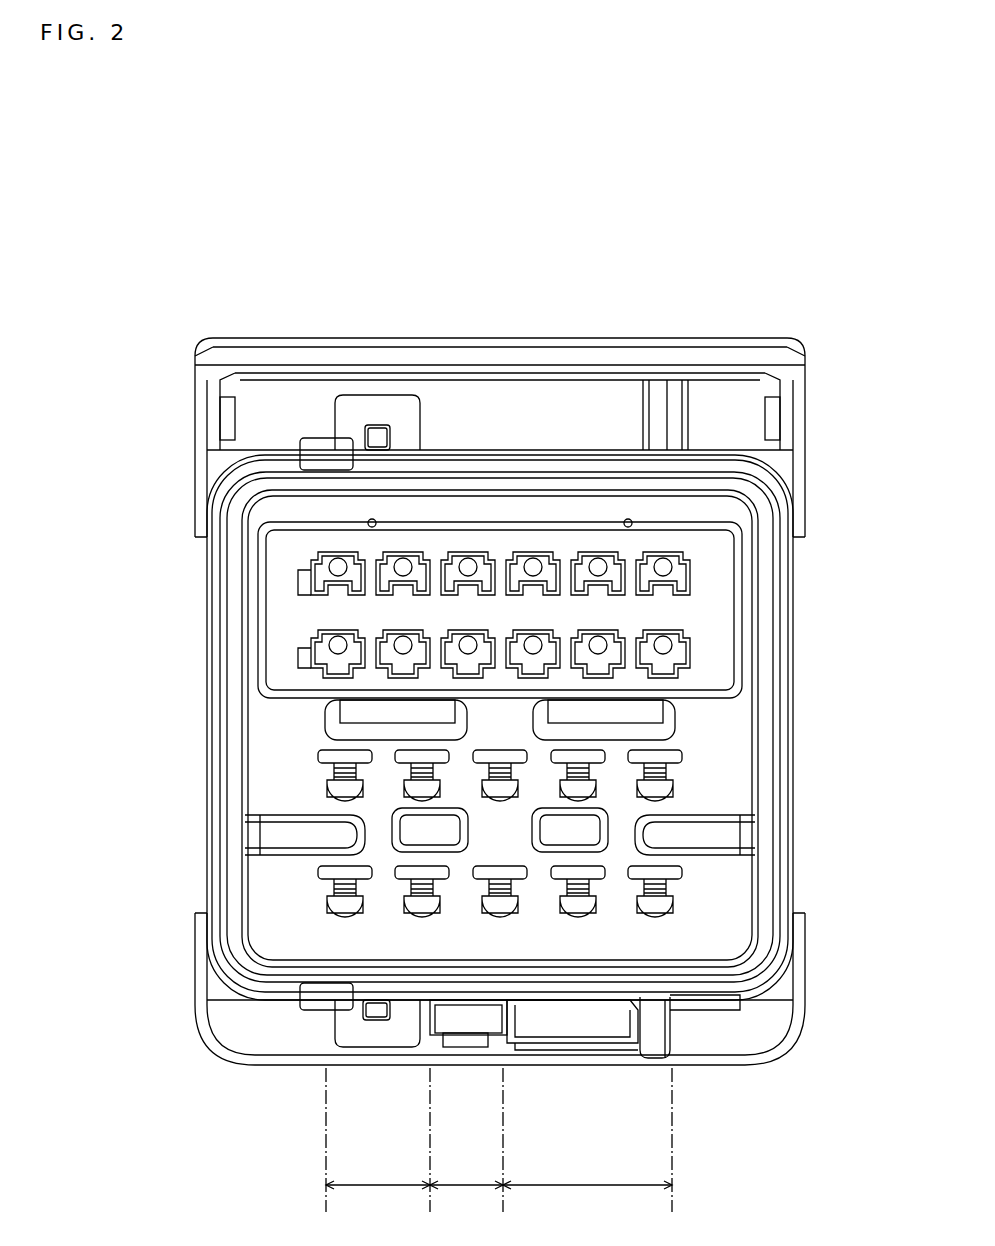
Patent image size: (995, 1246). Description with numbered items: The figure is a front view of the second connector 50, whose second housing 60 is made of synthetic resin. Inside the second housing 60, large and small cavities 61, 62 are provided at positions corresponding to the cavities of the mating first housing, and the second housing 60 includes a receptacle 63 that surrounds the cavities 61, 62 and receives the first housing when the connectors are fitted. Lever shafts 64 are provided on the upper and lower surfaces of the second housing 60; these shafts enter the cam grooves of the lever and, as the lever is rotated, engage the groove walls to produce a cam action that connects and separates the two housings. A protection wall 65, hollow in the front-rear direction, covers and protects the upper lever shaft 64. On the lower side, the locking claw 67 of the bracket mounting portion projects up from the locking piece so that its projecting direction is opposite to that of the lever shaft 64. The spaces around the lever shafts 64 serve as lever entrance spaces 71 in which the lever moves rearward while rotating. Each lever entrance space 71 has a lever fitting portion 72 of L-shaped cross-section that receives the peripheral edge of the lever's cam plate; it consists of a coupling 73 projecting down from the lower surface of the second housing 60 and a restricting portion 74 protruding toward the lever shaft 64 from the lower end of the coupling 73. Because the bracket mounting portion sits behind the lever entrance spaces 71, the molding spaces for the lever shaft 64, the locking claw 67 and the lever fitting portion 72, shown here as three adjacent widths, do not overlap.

The second connector 50 is at (499, 182).
The second housing 60 is at (499, 326).
The large cavities 61 is at (665, 636).
The small cavities 62 is at (662, 752).
The receptacle 63 is at (777, 791).
The lever shaft 64 is at (377, 407).
The protection wall 65 is at (558, 352).
The locking claw 67 is at (468, 1022).
The lever entrance space 71 is at (575, 415).
The lever fitting portion 72 is at (775, 1150).
The coupling 73 is at (653, 1025).
The restricting portion 74 is at (610, 1050).